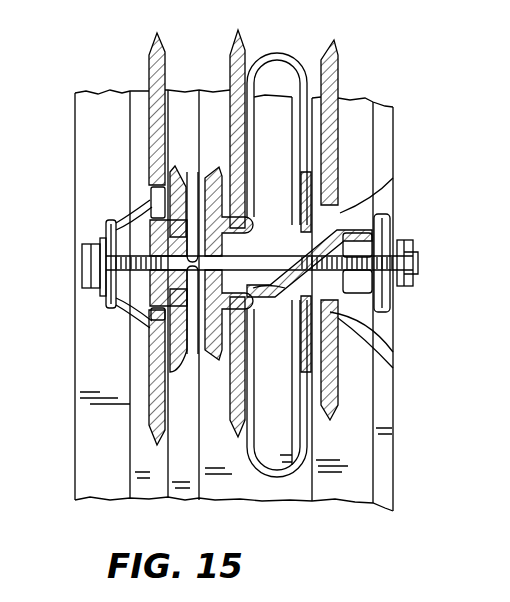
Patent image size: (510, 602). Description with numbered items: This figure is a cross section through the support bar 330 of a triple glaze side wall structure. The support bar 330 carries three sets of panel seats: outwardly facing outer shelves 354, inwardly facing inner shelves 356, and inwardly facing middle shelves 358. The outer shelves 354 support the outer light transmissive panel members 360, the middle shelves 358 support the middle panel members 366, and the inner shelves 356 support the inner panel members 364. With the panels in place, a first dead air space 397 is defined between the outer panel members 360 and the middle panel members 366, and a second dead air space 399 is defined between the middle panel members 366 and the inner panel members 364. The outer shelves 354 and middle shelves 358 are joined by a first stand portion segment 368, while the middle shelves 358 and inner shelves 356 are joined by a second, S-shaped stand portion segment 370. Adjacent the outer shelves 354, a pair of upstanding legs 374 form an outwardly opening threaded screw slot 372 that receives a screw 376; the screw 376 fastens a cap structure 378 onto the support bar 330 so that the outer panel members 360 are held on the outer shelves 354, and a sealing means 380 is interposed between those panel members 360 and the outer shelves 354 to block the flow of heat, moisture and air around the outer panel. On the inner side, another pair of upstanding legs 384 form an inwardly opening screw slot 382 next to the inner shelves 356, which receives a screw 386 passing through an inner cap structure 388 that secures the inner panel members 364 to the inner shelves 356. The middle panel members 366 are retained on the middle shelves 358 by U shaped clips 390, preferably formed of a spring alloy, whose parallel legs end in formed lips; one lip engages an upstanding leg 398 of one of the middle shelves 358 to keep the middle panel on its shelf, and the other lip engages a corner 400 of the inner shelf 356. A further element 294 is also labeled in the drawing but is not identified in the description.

The flange 294 is at (285, 290).
The support bar 330 is at (177, 156).
The outer shelves 354 is at (170, 374).
The inner shelves 356 is at (340, 360).
The middle shelves 358 is at (220, 352).
The outer light transmissive panel members 360 is at (150, 71).
The inner panel members 364 is at (337, 69).
The middle panel members 366 is at (240, 52).
The first stand portion segment 368 is at (212, 262).
The second, S-shaped stand portion segment 370 is at (270, 253).
The outwardly opening threaded screw slot 372 is at (107, 216).
The upstanding legs 374 is at (107, 322).
The screw 376 is at (82, 276).
The cap structure 378 is at (125, 225).
The sealing means 380 is at (170, 190).
The inwardly opening screw slot 382 is at (393, 178).
The upstanding legs 384 is at (394, 323).
The screw 386 is at (409, 284).
The inner cap structure 388 is at (393, 232).
The U shaped clips 390 is at (289, 56).
The first dead air space 397 is at (213, 98).
The upstanding leg 398 is at (204, 350).
The second dead air space 399 is at (310, 65).
The corner 400 is at (341, 358).